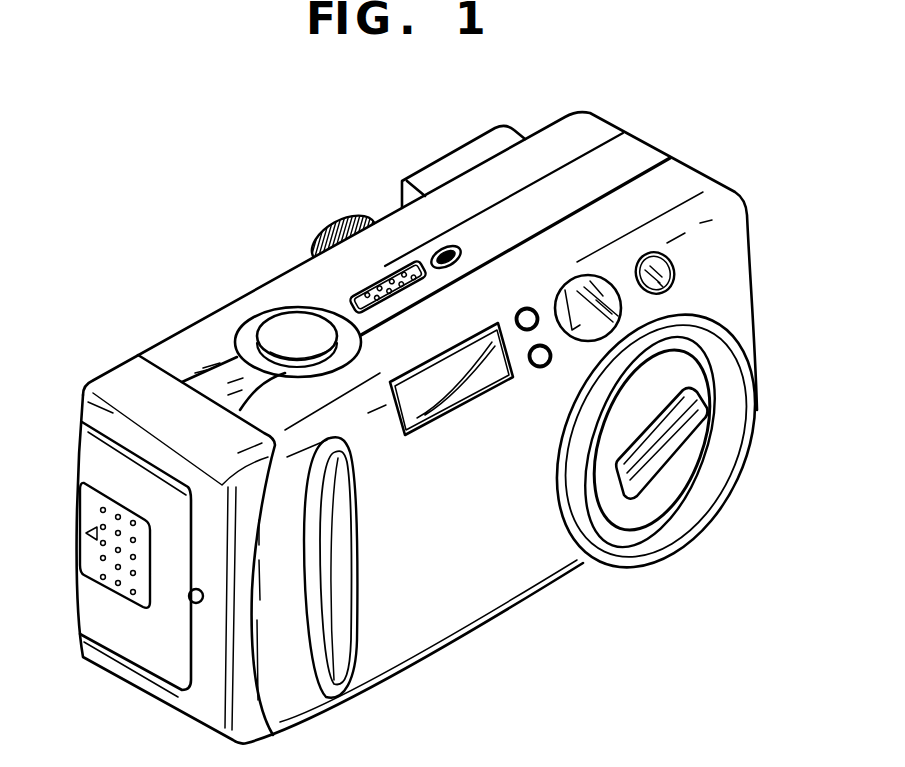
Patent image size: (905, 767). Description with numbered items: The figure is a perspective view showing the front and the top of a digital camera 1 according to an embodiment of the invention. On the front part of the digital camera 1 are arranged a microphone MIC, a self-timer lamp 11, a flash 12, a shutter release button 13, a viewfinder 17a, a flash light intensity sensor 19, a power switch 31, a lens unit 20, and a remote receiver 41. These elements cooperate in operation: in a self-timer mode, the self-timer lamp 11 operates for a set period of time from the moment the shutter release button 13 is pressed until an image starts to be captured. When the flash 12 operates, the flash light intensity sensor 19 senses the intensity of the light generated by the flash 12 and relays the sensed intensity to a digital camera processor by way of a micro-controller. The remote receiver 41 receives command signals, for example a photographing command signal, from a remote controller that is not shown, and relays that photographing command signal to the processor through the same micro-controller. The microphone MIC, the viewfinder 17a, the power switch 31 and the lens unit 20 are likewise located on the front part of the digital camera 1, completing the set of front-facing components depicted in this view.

The digital camera 1 is at (108, 254).
The self-timer lamp 11 is at (652, 257).
The flash 12 is at (430, 388).
The shutter release button 13 is at (290, 330).
The viewfinder 17a is at (588, 290).
The flash light intensity sensor 19 is at (540, 321).
The lens unit 20 is at (660, 443).
The power switch 31 is at (336, 226).
The remote receiver 41 is at (552, 357).
The microphone MIC is at (443, 253).